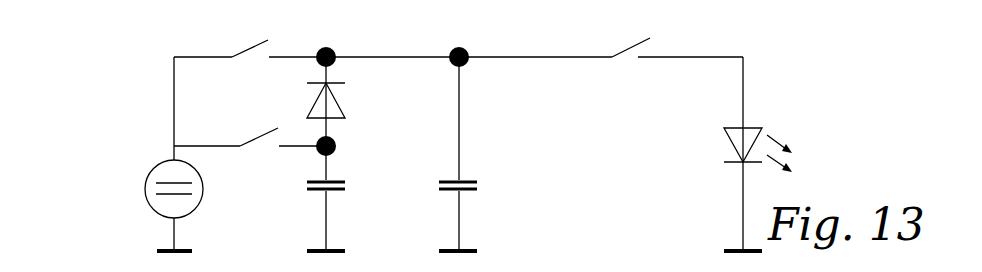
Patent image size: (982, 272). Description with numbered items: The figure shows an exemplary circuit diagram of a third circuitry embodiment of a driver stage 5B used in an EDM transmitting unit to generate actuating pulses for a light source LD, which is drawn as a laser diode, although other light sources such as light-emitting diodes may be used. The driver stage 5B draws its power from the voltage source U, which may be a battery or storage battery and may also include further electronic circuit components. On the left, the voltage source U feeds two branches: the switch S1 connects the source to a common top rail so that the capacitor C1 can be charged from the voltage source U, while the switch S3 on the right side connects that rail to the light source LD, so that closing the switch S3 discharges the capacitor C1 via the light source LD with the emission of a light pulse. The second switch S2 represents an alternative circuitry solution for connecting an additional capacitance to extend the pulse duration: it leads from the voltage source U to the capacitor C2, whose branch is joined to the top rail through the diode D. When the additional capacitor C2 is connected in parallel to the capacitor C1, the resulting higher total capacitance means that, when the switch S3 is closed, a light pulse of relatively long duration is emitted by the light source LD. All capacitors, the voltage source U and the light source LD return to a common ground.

The driver stage 5B is at (134, 33).
The voltage source U is at (156, 205).
The switch S1 is at (266, 43).
The switch S2 is at (266, 131).
The switch S3 is at (601, 41).
The diode D is at (337, 101).
The capacitor C1 is at (473, 154).
The capacitor C2 is at (340, 198).
The light source LD is at (731, 154).